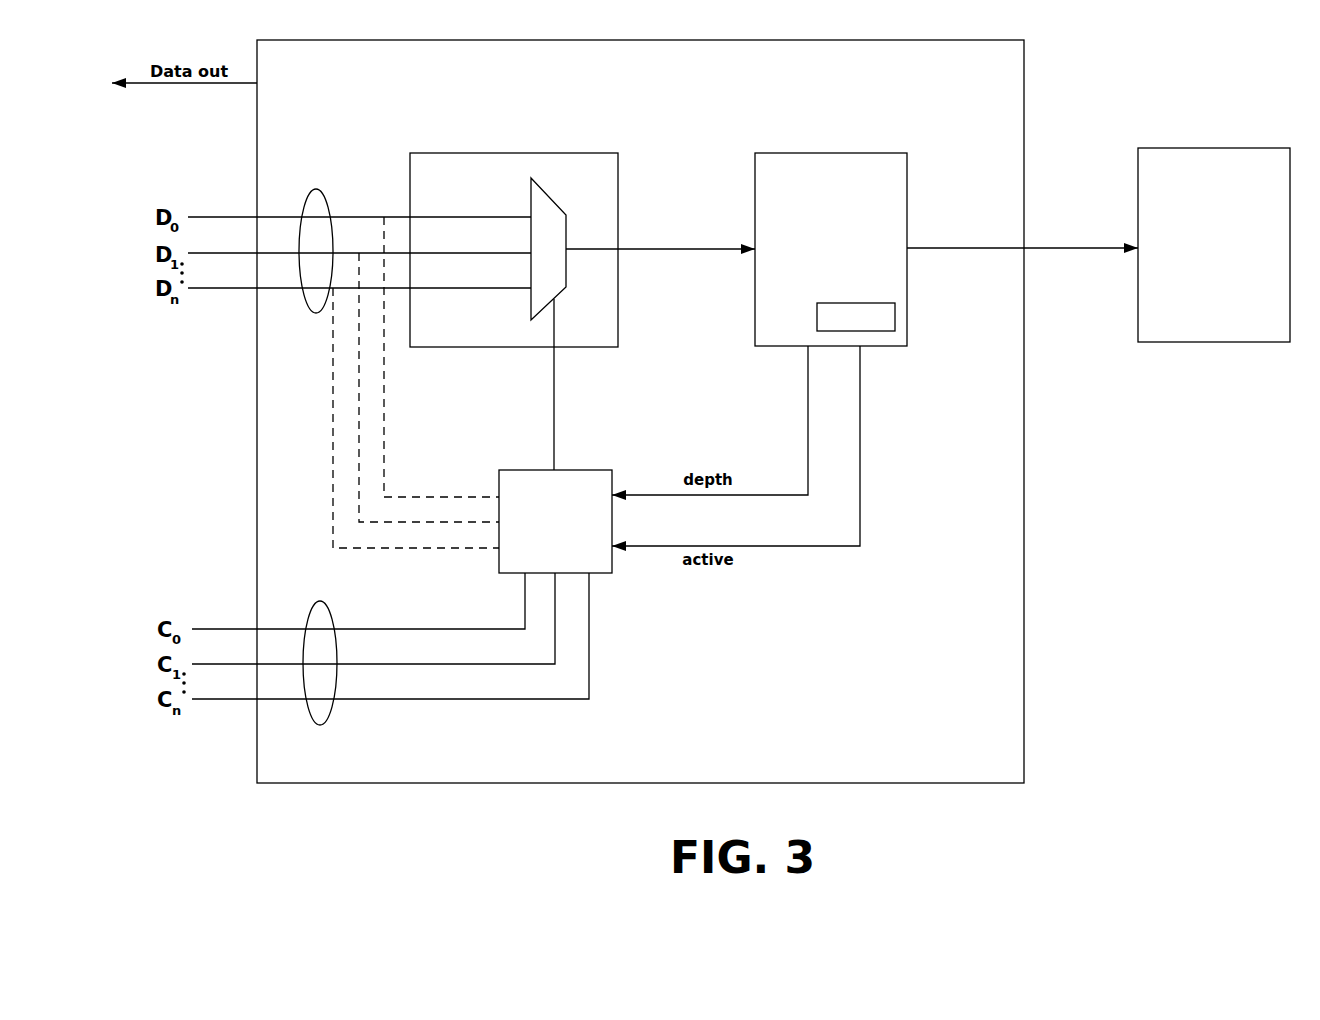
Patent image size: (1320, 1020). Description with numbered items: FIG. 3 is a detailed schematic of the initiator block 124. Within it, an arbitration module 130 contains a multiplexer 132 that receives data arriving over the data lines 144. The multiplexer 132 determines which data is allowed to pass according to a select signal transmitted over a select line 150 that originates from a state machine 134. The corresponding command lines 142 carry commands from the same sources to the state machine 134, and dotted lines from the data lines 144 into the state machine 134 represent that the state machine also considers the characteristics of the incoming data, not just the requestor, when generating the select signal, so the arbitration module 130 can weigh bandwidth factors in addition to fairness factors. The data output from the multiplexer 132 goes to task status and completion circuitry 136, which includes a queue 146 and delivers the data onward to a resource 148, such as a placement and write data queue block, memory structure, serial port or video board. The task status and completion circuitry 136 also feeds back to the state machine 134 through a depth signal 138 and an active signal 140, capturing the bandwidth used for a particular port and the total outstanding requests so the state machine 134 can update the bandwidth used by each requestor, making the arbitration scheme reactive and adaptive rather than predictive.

The initiator block 124 is at (1026, 675).
The arbitration module 130 is at (562, 152).
The multiplexer 132 is at (566, 218).
The state machine 134 is at (612, 573).
The task status and completion circuitry 136 is at (857, 152).
The depth signal 138 is at (808, 407).
The active signal 140 is at (860, 490).
The command lines C0 through Cn 142 is at (328, 722).
The data lines D0 through Dn 144 is at (322, 190).
The queue 146 is at (895, 316).
The resource 148 is at (1199, 247).
The select line 150 is at (554, 425).